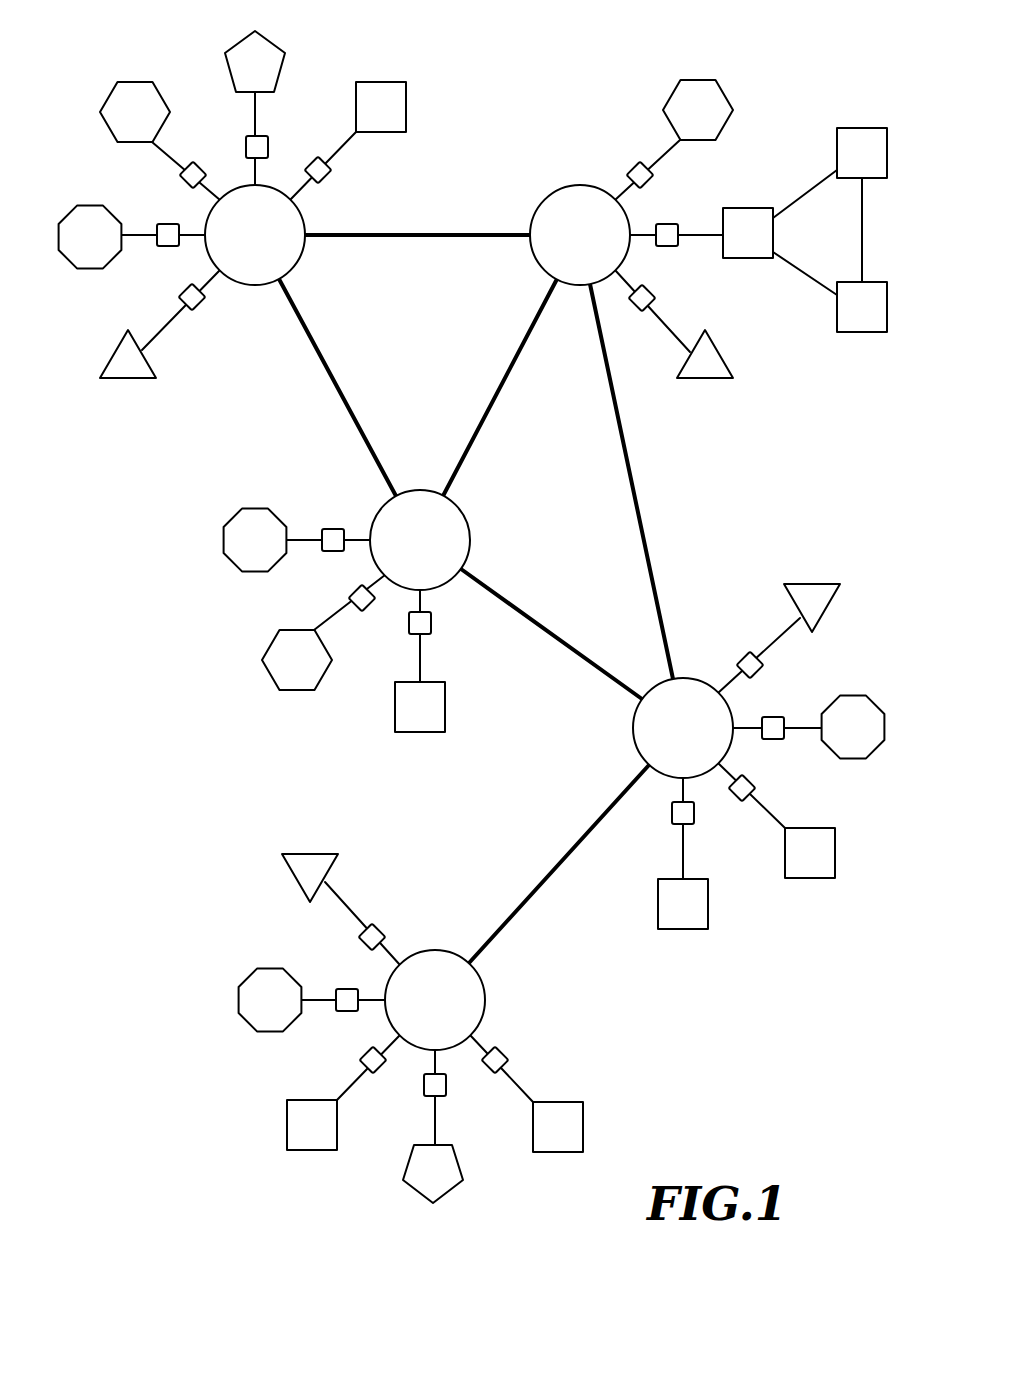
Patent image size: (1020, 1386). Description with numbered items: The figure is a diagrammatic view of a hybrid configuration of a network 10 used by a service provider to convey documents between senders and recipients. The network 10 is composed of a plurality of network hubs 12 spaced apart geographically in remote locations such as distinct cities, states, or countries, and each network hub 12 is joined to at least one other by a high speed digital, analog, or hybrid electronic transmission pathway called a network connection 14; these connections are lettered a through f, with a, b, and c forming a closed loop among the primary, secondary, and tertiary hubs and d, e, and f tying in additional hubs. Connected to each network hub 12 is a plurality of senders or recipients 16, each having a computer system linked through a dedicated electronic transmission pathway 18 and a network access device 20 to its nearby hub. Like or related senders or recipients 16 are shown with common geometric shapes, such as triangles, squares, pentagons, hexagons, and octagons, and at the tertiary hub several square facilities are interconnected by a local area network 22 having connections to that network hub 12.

The network 10 is at (222, 762).
The network hub 12 is at (298, 265).
The network connection 14 is at (348, 392).
The sender or recipient 16 is at (134, 82).
The dedicated electronic transmission pathway 18 is at (168, 155).
The network access device 20 is at (200, 162).
The local area network 22 is at (812, 178).